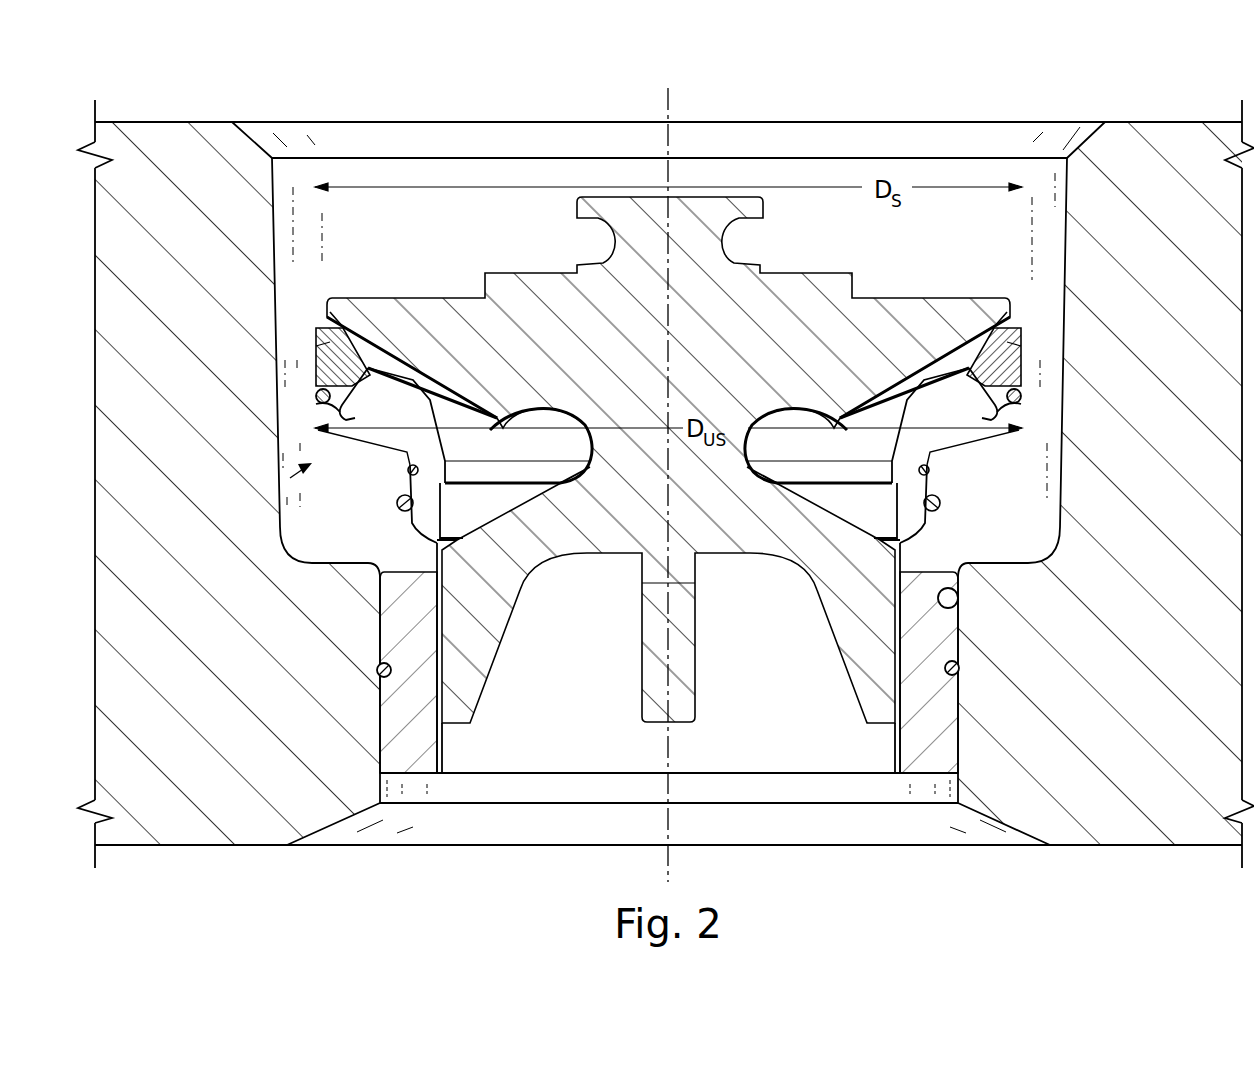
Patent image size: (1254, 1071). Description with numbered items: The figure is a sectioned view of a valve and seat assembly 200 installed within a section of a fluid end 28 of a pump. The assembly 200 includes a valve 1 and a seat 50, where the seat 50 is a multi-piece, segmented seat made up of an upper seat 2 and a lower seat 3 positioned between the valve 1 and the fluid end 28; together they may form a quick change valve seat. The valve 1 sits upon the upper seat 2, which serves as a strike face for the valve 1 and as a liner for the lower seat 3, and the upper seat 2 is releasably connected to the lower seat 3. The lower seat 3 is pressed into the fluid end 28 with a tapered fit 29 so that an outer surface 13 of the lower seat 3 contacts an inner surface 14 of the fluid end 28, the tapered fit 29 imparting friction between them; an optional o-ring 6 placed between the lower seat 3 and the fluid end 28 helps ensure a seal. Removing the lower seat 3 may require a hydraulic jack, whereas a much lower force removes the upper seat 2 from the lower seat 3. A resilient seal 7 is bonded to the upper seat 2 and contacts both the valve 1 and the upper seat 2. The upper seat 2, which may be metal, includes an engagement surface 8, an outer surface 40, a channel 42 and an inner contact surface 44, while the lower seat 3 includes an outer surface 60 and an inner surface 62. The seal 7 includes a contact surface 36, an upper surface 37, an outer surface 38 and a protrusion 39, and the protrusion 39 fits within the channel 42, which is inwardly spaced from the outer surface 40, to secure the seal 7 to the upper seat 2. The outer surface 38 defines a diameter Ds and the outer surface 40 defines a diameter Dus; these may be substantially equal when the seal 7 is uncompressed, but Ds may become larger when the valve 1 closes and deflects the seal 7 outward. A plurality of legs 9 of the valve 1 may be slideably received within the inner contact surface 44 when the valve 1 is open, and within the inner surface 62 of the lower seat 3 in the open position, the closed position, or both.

The valve and seat assembly 200 is at (427, 88).
The fluid end 28 is at (1168, 130).
The valve 1 is at (790, 285).
The upper seat 2 is at (905, 437).
The lower seat 3 is at (905, 753).
The o-ring 6 is at (378, 672).
The resilient seal 7 is at (320, 347).
The engagement surface 8 is at (437, 372).
The plurality of legs 9 is at (507, 622).
The outer surface 13 is at (378, 725).
The inner surface 14 is at (958, 598).
The tapered fit 29 is at (962, 700).
The contact surface 36 is at (362, 345).
The upper surface 37 is at (333, 322).
The outer surface 38 is at (318, 330).
The protrusion 39 is at (318, 440).
The outer surface 40 is at (318, 393).
The channel 42 is at (322, 406).
The inner contact surface 44 is at (442, 522).
The seat 50 is at (292, 478).
The outer surface 60 is at (305, 530).
The inner surface 62 is at (440, 748).